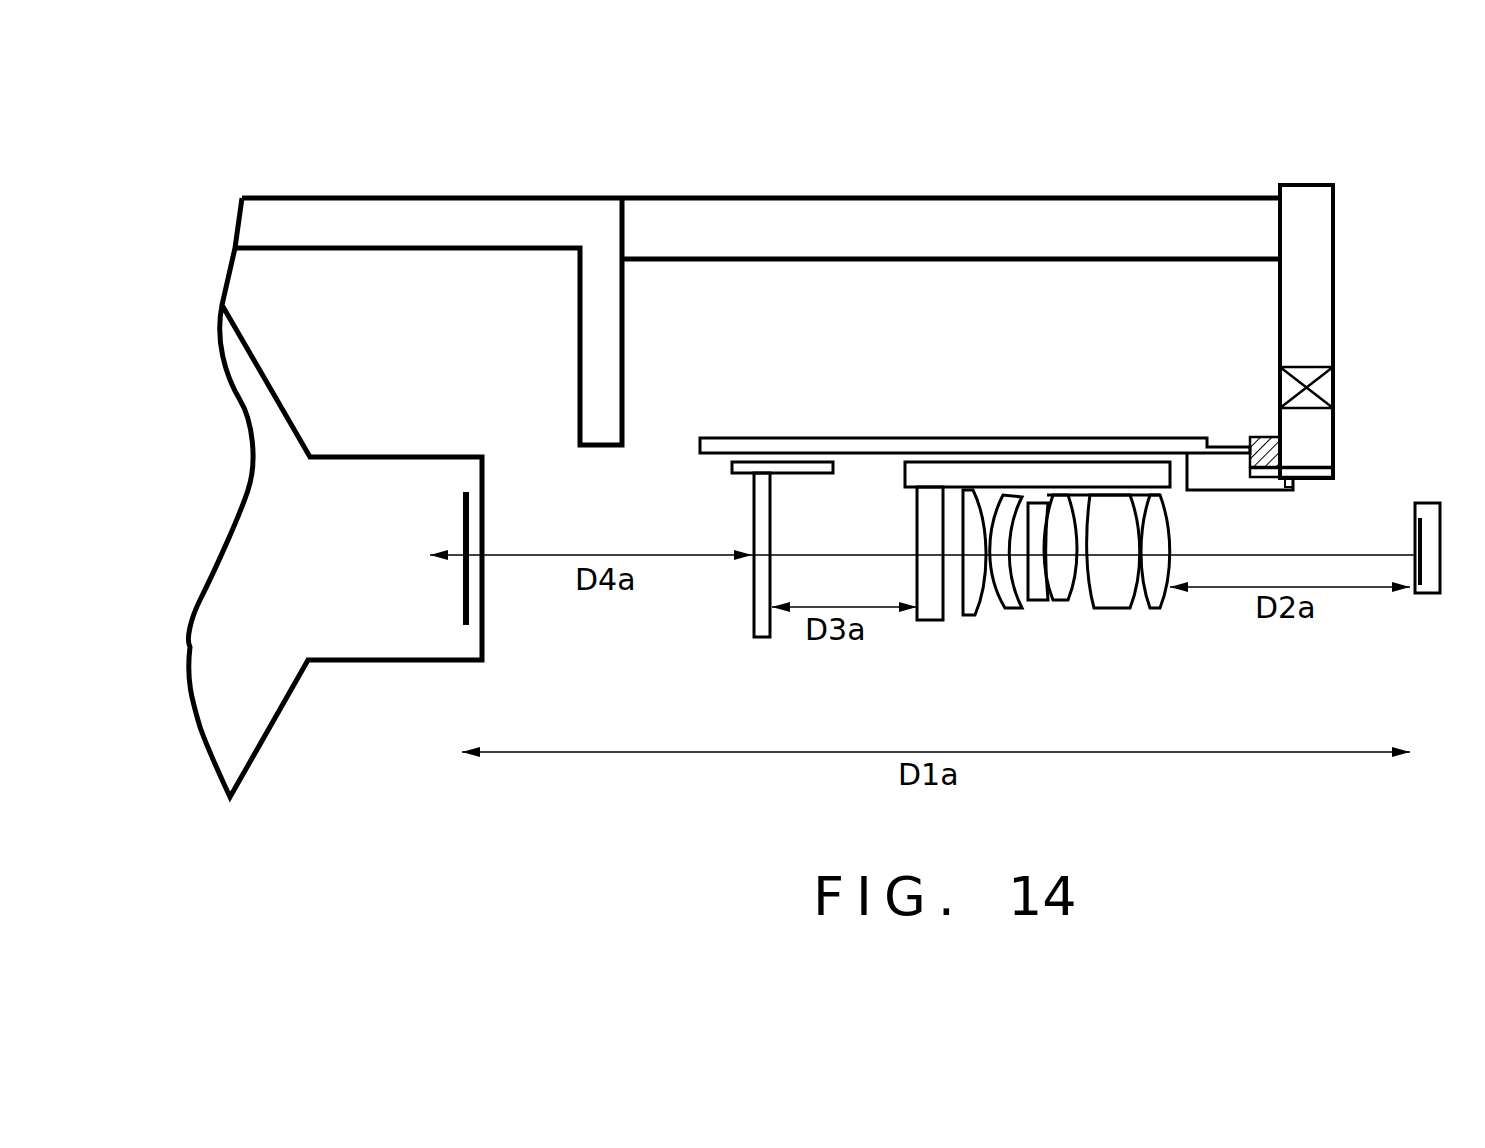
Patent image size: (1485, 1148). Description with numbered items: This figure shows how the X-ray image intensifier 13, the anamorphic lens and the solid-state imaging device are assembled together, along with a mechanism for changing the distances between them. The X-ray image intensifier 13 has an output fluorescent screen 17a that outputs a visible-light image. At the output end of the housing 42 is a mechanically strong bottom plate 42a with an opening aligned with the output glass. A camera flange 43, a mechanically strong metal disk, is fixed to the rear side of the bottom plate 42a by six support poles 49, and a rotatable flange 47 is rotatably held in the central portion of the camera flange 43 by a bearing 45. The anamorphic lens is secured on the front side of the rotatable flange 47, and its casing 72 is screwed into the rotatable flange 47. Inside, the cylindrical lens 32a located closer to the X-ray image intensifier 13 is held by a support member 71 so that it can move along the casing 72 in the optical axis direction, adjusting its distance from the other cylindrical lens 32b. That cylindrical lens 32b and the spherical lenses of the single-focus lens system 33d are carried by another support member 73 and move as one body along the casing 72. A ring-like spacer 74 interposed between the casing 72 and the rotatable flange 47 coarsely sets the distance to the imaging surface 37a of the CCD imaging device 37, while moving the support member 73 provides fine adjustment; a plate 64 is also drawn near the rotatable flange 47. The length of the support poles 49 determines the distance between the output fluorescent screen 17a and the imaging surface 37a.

The X-ray image intensifier 13 is at (388, 455).
The output fluorescent screen 17a is at (472, 513).
The housing 42 is at (440, 207).
The bottom plate 42a is at (608, 318).
The support poles 49 is at (960, 208).
The camera flange 43 is at (1330, 296).
The bearing 45 is at (1330, 385).
The rotatable flange 47 is at (1325, 447).
The ring-like spacer 74 is at (1265, 437).
The support plate 64 is at (1311, 486).
The casing 72 is at (787, 445).
The support member 71 is at (822, 475).
The support member 73 is at (1003, 450).
The cylindrical lens 32a is at (757, 584).
The cylindrical lens 32b is at (933, 612).
The single-focus lens system 33d is at (1055, 608).
The CCD imaging device 37 is at (1432, 596).
The imaging surface 37a is at (1415, 540).